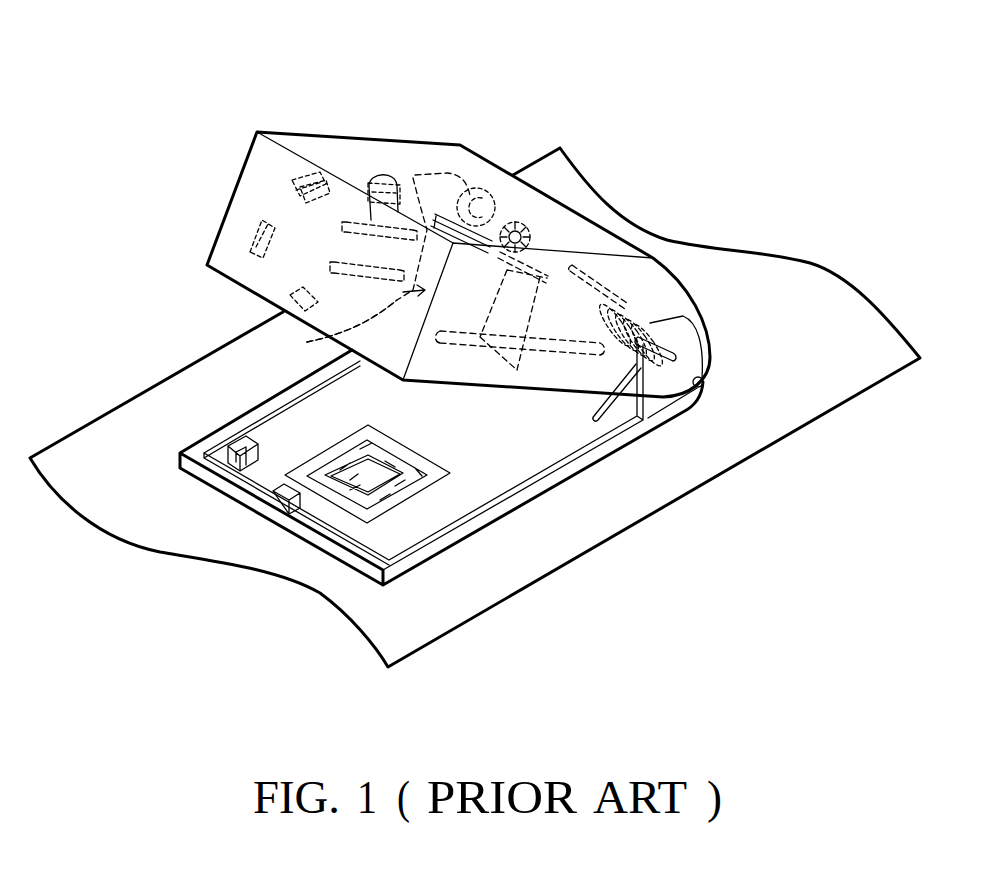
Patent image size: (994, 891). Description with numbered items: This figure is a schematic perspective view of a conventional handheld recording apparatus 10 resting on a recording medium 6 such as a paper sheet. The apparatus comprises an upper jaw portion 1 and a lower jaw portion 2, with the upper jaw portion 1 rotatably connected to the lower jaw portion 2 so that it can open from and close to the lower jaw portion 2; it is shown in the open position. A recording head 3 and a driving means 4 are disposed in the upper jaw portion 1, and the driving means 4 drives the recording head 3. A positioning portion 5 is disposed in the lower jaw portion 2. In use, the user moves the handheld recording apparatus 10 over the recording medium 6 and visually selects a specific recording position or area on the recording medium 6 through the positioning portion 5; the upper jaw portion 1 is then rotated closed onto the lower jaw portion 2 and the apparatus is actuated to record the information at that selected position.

The handheld recording apparatus 10 is at (217, 106).
The upper jaw portion 1 is at (458, 225).
The lower jaw portion 2 is at (441, 493).
The recording head 3 is at (330, 340).
The driving means 4 is at (405, 152).
The positioning portion 5 is at (337, 524).
The recording medium 6 is at (530, 568).